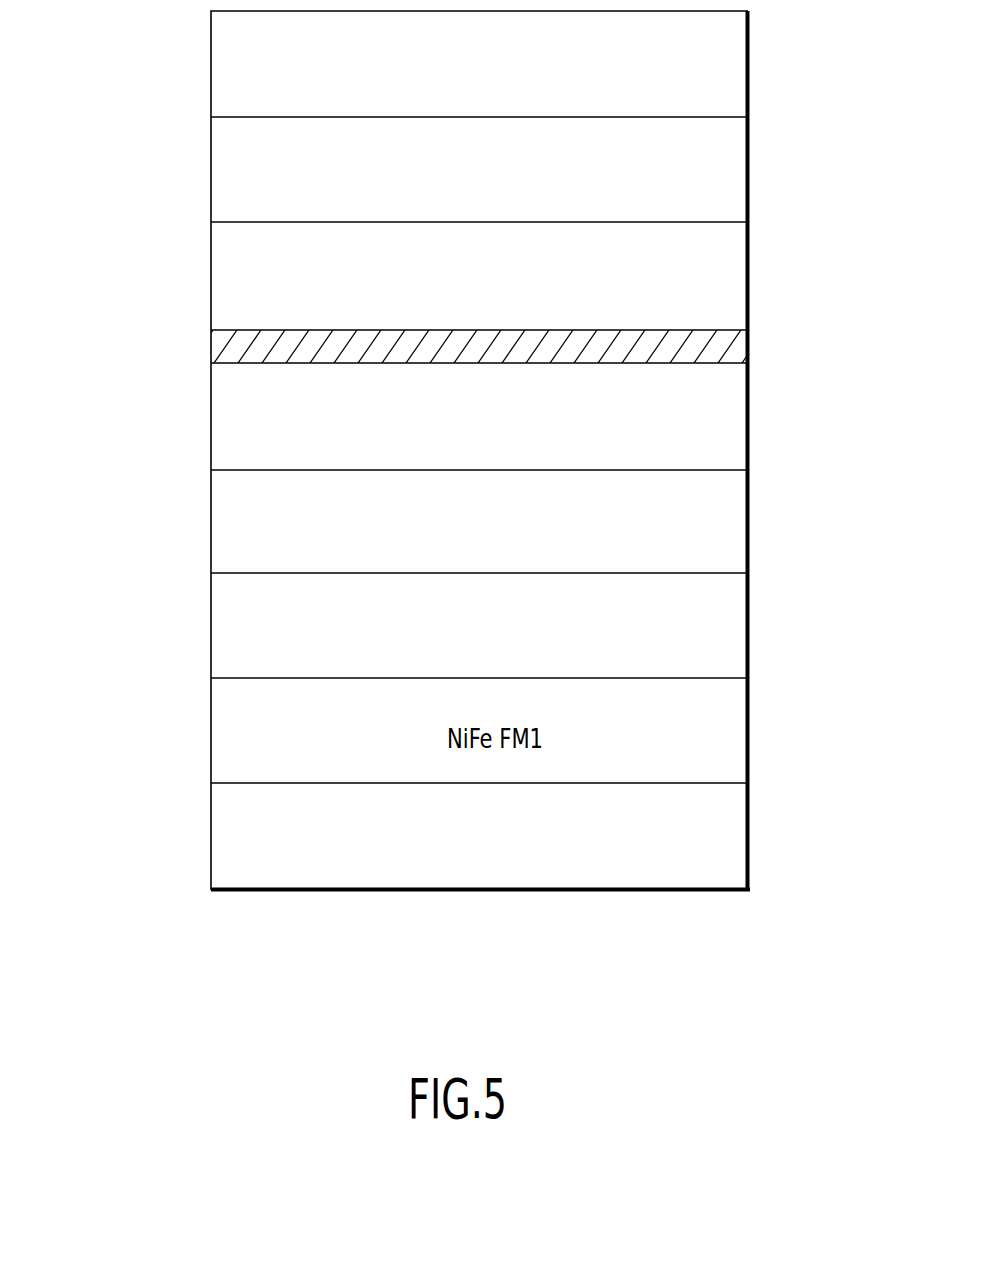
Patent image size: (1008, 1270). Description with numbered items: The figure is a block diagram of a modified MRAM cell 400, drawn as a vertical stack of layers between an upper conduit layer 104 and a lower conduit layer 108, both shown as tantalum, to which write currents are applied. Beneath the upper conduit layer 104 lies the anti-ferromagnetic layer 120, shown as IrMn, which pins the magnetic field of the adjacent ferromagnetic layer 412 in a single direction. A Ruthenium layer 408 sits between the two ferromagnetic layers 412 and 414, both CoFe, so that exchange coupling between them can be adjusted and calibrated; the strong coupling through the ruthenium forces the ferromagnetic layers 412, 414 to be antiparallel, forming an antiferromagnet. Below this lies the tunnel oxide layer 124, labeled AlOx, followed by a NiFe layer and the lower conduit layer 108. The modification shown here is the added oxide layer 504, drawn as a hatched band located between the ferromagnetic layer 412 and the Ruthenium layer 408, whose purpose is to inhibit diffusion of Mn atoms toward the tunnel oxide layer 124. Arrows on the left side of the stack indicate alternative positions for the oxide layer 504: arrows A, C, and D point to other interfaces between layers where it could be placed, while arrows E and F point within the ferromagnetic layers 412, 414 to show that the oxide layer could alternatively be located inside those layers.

The MRAM cell 400 is at (208, 953).
The upper conduit layer 104 is at (715, 63).
The anti-ferromagnetic layer 120 is at (725, 175).
The ferromagnetic layer 412 is at (748, 248).
The oxide layer 504 is at (737, 344).
The Ruthenium layer 408 is at (722, 423).
The ferromagnetic layer 414 is at (720, 519).
The tunnel oxide layer 124 is at (720, 634).
The lower conduit layer 108 is at (677, 862).
The arrow A is at (193, 222).
The arrow F is at (190, 292).
The arrow D is at (193, 470).
The arrow E is at (193, 532).
The arrow C is at (193, 575).